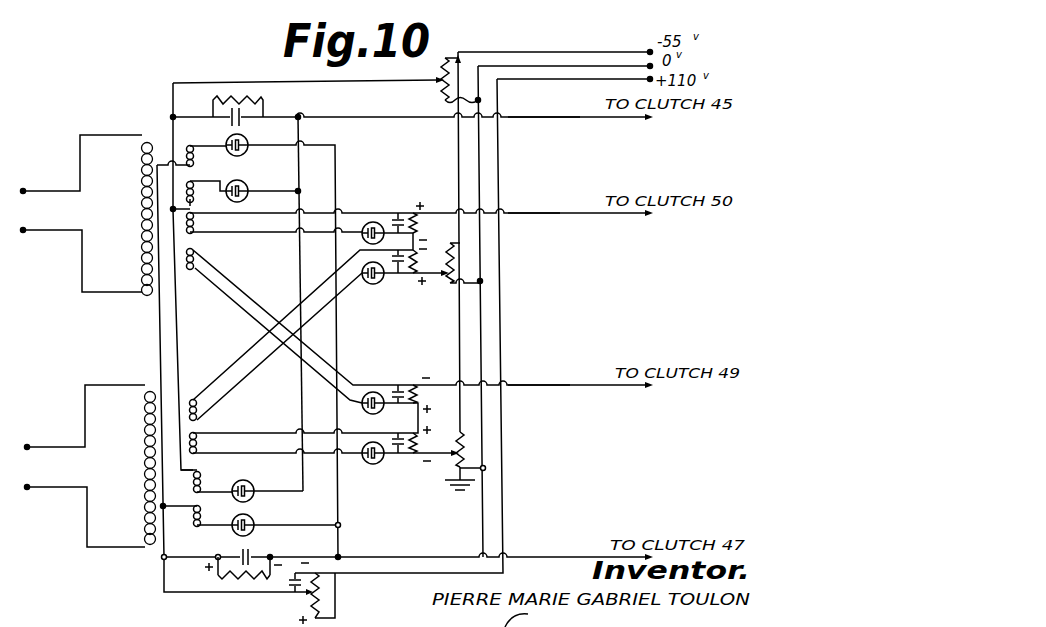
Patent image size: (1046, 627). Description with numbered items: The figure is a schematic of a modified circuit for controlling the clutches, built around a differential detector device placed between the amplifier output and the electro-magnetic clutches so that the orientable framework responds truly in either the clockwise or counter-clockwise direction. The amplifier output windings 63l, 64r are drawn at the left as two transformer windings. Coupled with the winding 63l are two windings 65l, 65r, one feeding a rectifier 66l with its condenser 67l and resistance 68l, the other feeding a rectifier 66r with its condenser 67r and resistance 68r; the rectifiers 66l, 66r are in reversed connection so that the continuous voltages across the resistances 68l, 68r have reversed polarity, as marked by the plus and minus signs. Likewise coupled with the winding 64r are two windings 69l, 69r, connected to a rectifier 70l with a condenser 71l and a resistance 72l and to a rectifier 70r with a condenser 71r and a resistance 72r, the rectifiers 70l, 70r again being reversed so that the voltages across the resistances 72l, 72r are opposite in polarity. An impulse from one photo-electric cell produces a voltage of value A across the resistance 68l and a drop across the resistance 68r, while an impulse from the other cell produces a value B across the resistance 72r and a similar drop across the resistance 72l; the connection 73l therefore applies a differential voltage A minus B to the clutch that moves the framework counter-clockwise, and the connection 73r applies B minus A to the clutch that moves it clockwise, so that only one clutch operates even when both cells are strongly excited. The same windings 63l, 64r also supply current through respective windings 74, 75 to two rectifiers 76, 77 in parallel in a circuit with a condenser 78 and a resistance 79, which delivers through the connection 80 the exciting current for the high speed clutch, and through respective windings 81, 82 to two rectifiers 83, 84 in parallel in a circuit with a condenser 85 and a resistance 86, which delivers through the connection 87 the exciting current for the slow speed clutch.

The amplifier output winding 63l is at (141, 206).
The amplifier output winding 64r is at (144, 464).
The winding 65l is at (196, 234).
The winding 65r is at (200, 266).
The rectifier 66l is at (370, 222).
The rectifier 66r is at (376, 412).
The condenser 67l is at (396, 212).
The condenser 67r is at (396, 383).
The resistance 68l is at (432, 212).
The resistance 68r is at (432, 383).
The winding 69l is at (199, 410).
The winding 69r is at (199, 455).
The rectifier 70l is at (374, 285).
The rectifier 70r is at (374, 465).
The condenser 71l is at (404, 275).
The condenser 71r is at (404, 456).
The resistance 72l is at (450, 276).
The resistance 72r is at (452, 462).
The connection 73l is at (546, 210).
The connection 73r is at (562, 382).
The winding 74 is at (193, 165).
The winding 75 is at (206, 528).
The rectifier 76 is at (246, 142).
The rectifier 77 is at (254, 520).
The condenser 78 is at (256, 553).
The resistance 79 is at (238, 579).
The connection 80 is at (540, 555).
The winding 81 is at (199, 196).
The winding 82 is at (206, 490).
The rectifier 83 is at (246, 189).
The rectifier 84 is at (252, 484).
The condenser 85 is at (244, 113).
The resistance 86 is at (232, 95).
The connection 87 is at (558, 114).